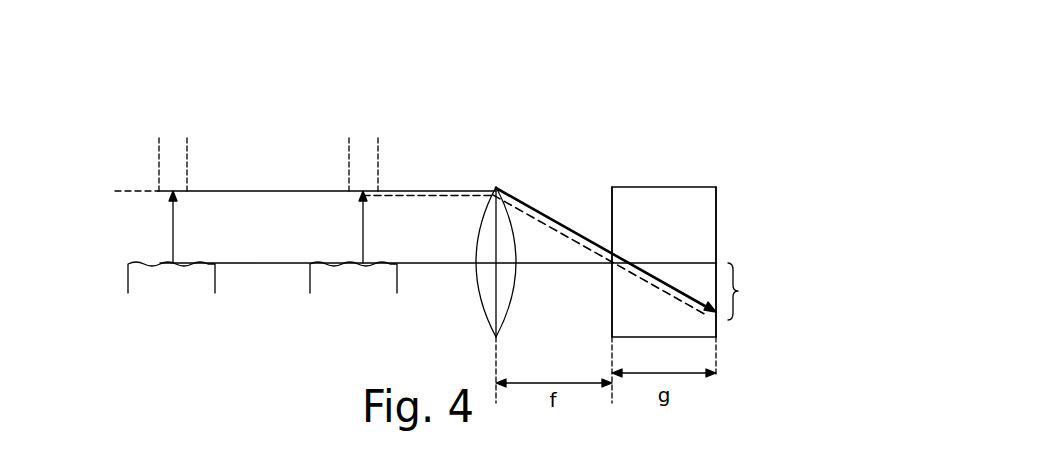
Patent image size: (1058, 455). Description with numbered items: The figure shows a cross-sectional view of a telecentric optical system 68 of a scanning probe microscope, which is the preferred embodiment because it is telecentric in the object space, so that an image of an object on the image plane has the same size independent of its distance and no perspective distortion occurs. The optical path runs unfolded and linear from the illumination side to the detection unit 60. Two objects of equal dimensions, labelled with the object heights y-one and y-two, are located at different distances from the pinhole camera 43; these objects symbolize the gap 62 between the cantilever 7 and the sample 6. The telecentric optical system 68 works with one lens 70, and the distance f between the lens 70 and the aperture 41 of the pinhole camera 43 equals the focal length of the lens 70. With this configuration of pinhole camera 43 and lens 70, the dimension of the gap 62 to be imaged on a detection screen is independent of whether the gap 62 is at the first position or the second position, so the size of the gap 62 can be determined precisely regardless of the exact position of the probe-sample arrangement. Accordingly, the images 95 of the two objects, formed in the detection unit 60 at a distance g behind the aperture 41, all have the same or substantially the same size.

The sample 6 is at (177, 277).
The cantilever 7 is at (172, 170).
The gap 62 is at (175, 225).
The lens 70 is at (479, 302).
The detection unit 60 is at (645, 187).
The pinhole camera 43 is at (611, 200).
The aperture 41 is at (613, 254).
The optical system 68 is at (710, 159).
The images 95 is at (749, 291).